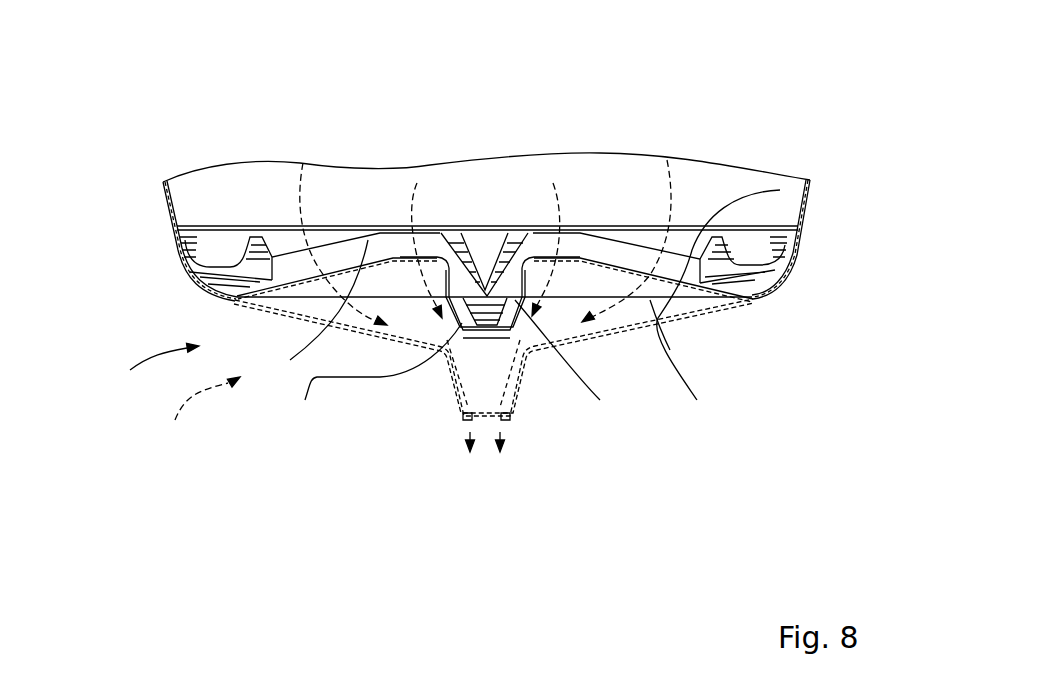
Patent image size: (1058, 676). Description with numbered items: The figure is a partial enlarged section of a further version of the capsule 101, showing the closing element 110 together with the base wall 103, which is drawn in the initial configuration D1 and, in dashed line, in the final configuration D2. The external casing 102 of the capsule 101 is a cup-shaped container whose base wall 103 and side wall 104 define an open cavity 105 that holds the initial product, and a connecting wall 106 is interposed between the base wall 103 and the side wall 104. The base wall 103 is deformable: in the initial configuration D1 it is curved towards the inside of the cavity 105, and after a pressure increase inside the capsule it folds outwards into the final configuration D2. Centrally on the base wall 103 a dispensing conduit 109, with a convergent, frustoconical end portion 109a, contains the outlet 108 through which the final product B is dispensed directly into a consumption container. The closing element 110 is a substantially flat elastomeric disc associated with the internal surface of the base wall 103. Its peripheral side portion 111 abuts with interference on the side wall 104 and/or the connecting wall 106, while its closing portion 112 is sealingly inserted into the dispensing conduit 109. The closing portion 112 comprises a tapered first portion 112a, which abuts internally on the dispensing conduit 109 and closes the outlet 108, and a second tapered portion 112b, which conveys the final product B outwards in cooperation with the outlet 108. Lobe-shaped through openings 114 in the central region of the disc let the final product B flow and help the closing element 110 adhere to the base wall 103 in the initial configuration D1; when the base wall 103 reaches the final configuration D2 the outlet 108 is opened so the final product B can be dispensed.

The capsule 101 is at (222, 104).
The external casing 102 is at (770, 139).
The base wall 103 is at (648, 300).
The side wall 104 is at (163, 217).
The cavity 105 is at (265, 212).
The connecting wall 106 is at (183, 272).
The outlet 108 is at (468, 338).
The dispensing conduit 109 is at (598, 400).
The end portion 109a is at (361, 379).
The closing element 110 is at (362, 226).
The peripheral side portion 111 is at (200, 290).
The closing portion 112 is at (462, 323).
The first portion 112a is at (670, 350).
The second tapered portion 112b is at (576, 368).
The through opening 114 is at (767, 193).
The initial configuration D1 is at (143, 374).
The final configuration D2 is at (196, 416).
The final product B is at (468, 460).